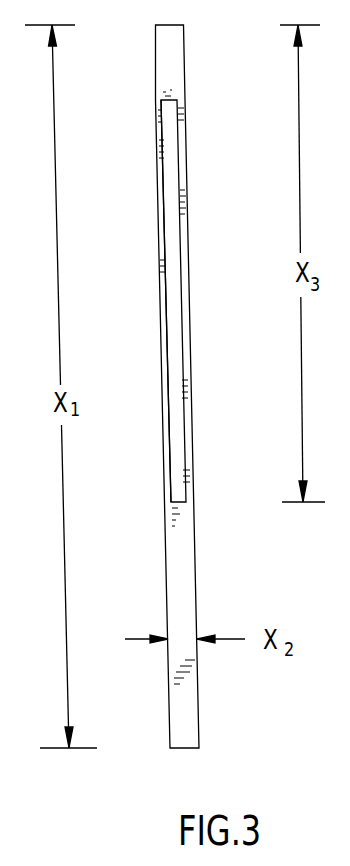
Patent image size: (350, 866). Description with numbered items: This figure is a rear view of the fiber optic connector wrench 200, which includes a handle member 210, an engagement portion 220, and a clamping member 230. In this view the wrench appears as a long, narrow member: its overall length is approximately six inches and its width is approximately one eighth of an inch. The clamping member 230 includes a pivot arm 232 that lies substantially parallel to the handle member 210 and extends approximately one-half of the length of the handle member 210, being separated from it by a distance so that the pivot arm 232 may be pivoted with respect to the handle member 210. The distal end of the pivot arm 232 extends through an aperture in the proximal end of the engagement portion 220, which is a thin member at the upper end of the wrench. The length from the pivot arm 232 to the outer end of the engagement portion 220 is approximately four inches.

The fiber optic connector wrench 200 is at (170, 378).
The handle member 210 is at (166, 546).
The engagement portion 220 is at (190, 36).
The clamping member 230 is at (180, 241).
The pivot arm 232 is at (168, 332).